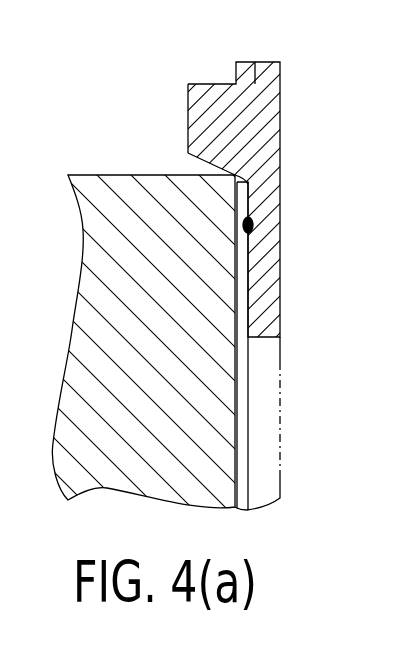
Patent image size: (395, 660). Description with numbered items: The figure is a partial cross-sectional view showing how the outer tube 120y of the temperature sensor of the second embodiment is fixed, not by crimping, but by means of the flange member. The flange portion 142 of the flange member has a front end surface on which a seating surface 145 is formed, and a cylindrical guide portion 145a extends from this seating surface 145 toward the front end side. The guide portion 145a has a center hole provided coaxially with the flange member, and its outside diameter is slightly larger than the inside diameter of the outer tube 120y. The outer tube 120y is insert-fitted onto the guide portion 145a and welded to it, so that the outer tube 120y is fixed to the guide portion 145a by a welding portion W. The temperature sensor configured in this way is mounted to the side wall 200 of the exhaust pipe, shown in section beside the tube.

The flange portion 142 is at (217, 83).
The seating surface 145 is at (205, 164).
The guide portion 145a is at (275, 273).
The side wall 200 is at (95, 290).
The outer tube 120y is at (242, 425).
The welding portion W is at (253, 224).